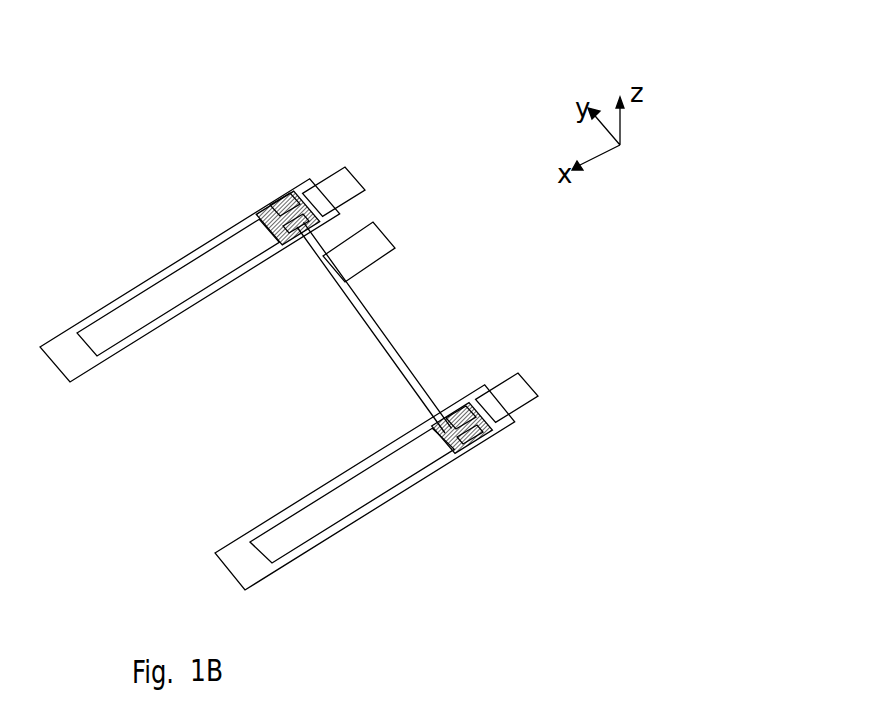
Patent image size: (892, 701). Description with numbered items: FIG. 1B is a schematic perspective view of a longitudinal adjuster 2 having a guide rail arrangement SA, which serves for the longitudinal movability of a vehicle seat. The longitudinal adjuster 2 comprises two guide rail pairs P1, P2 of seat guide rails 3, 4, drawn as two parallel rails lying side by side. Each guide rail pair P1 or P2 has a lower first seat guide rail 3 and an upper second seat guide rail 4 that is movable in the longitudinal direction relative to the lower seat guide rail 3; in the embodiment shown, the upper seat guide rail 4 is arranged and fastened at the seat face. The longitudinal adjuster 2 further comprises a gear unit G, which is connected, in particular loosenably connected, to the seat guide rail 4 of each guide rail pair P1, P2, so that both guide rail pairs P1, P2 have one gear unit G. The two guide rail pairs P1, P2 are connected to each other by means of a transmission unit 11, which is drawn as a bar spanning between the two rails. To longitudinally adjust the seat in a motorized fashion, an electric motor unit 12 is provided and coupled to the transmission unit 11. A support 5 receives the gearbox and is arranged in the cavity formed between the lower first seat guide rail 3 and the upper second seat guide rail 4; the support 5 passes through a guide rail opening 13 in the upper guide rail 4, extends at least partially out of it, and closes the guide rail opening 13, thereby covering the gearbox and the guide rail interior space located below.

The longitudinal adjuster 2 is at (530, 293).
The lower first seat guide rail 3 is at (110, 305).
The upper second seat guide rail 4 is at (380, 178).
The support 5 is at (257, 218).
The transmission unit 11 is at (387, 340).
The electric motor unit 12 is at (393, 243).
The guide rail opening 13 is at (290, 200).
The gear unit G is at (280, 205).
The first guide rail pair P1 is at (343, 119).
The second guide rail pair P2 is at (598, 430).
The guide rail arrangement SA is at (182, 520).